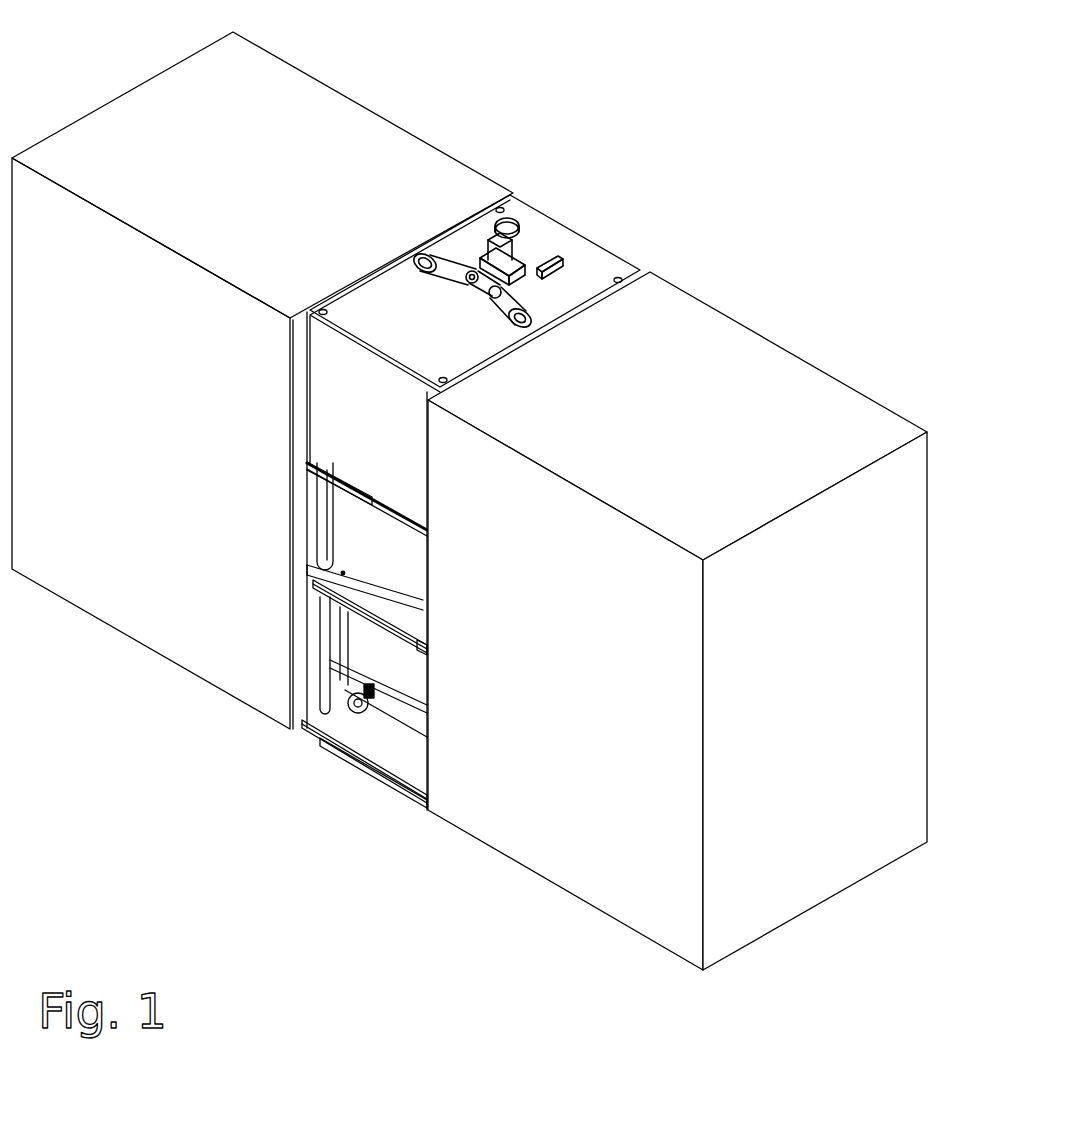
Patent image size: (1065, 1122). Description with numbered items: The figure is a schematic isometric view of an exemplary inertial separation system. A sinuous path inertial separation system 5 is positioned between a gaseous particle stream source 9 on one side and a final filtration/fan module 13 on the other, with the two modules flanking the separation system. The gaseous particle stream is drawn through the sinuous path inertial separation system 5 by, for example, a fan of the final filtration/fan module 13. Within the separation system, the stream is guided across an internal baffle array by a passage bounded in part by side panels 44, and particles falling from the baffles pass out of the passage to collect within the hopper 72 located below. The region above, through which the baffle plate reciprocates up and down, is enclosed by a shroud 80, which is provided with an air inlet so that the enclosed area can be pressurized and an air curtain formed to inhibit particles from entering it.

The gaseous particle stream source 9 is at (262, 380).
The sinuous path inertial separation system 5 is at (483, 470).
The final filtration/fan module 13 is at (677, 605).
The shroud 80 is at (231, 591).
The side panels 44 is at (293, 684).
The hopper 72 is at (351, 755).